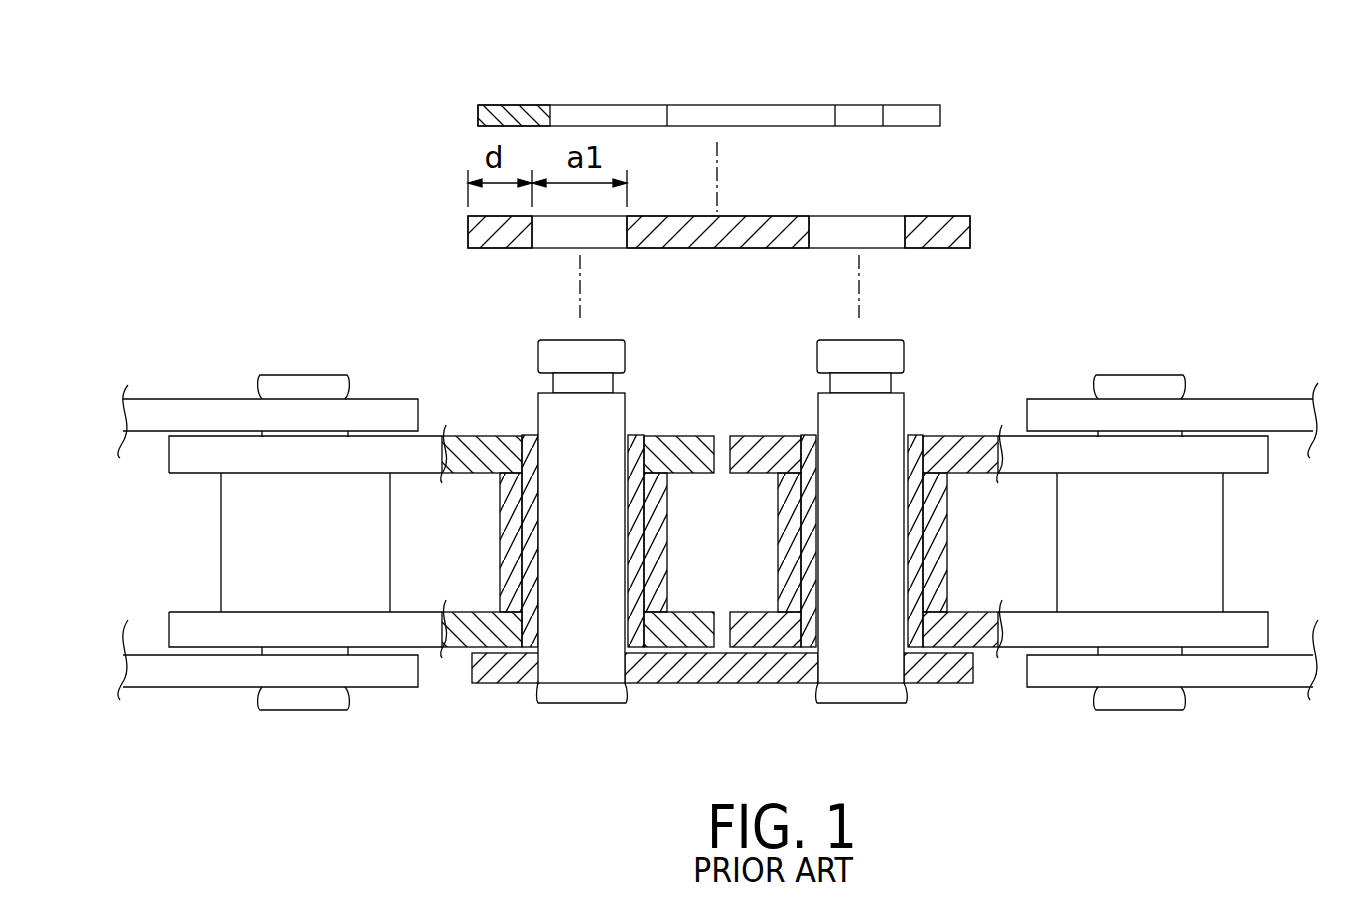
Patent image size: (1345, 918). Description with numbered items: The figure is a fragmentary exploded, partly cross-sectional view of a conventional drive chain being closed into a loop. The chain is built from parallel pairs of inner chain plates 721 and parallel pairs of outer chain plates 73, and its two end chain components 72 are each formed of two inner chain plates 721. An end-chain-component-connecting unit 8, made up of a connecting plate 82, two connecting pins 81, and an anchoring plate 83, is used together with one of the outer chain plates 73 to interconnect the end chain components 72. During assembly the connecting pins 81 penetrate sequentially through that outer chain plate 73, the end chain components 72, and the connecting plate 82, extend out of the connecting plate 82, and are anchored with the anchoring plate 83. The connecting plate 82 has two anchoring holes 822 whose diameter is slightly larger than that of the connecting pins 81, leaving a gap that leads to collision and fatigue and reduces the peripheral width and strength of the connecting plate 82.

The end-chain-component-connecting unit 8 is at (962, 98).
The anchoring plate 83 is at (513, 105).
The connecting plate 82 is at (992, 226).
The anchoring holes 822 is at (603, 241).
The end chain components 72 is at (484, 410).
The inner chain plates 721 is at (950, 455).
The outer chain plates 73 is at (727, 668).
The connecting pins 81 is at (572, 667).